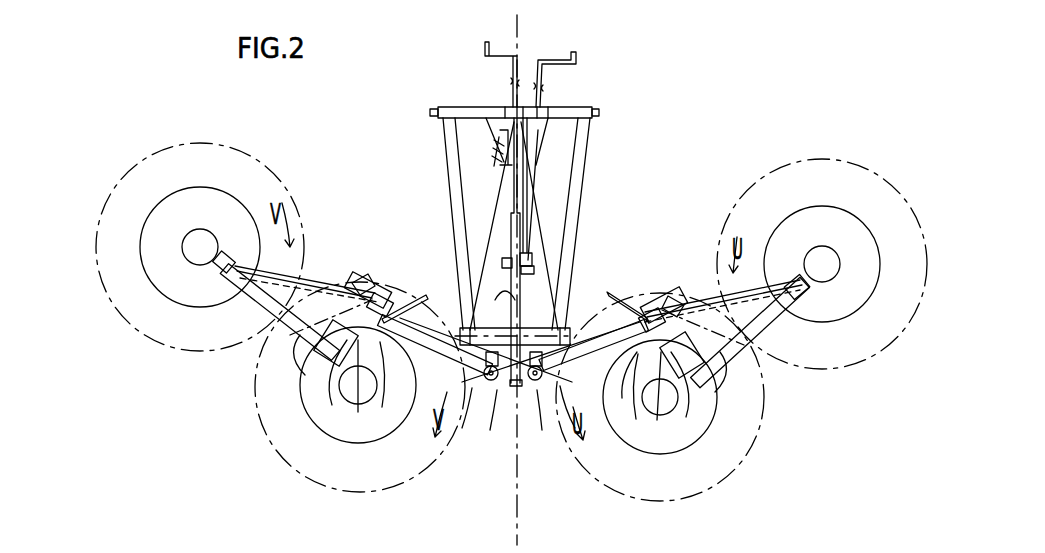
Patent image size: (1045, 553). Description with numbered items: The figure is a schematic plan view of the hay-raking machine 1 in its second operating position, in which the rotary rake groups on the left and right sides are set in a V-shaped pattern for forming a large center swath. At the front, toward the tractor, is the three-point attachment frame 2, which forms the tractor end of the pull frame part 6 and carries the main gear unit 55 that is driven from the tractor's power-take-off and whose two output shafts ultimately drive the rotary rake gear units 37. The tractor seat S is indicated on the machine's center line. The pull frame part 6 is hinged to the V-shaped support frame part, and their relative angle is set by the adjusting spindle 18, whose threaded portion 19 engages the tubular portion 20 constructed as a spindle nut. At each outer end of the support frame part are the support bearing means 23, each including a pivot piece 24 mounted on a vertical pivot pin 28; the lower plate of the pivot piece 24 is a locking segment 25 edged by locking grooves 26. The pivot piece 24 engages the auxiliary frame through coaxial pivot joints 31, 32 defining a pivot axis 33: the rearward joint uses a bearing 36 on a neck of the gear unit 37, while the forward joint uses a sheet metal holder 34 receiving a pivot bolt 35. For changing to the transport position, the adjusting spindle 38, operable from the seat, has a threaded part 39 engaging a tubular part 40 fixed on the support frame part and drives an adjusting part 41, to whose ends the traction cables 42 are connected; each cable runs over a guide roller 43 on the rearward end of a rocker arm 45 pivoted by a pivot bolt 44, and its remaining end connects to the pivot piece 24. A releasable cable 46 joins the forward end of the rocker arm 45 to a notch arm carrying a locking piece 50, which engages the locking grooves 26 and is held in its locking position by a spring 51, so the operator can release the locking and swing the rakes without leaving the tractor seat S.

The hay-raking machine 1 is at (376, 141).
The three-point attachment frame 2 is at (465, 110).
The pull frame part 6 is at (578, 110).
The adjusting spindle 18 is at (511, 170).
The threaded portion 19 is at (513, 203).
The tubular portion 20 is at (511, 224).
The support bearing means 23 is at (365, 256).
The pivot piece 24 is at (348, 280).
The locking segment 25 is at (503, 400).
The locking grooves 26 is at (503, 396).
The pivot pin 28 is at (287, 320).
The forward pivot joint 31 is at (386, 277).
The rearward pivot joint 32 is at (315, 340).
The pivot axis 33 is at (305, 382).
The sheet metal holder 34 is at (366, 282).
The pivot bolt 35 is at (377, 277).
The bearing 36 is at (514, 389).
The rotary rake gear unit 37 is at (312, 400).
The adjusting spindle 38 is at (533, 190).
The threaded part 39 is at (498, 292).
The tubular part 40 is at (518, 322).
The adjusting part 41 is at (530, 280).
The traction cables 42 is at (508, 276).
The guide roller 43 is at (515, 413).
The pivot bolt 44 is at (482, 383).
The rocker arm 45 is at (463, 364).
The releasable cable 46 is at (428, 323).
The locking piece 50 is at (415, 300).
The spring 51 is at (392, 340).
The main gear unit 55 is at (495, 143).
The tractor seat S is at (517, 42).